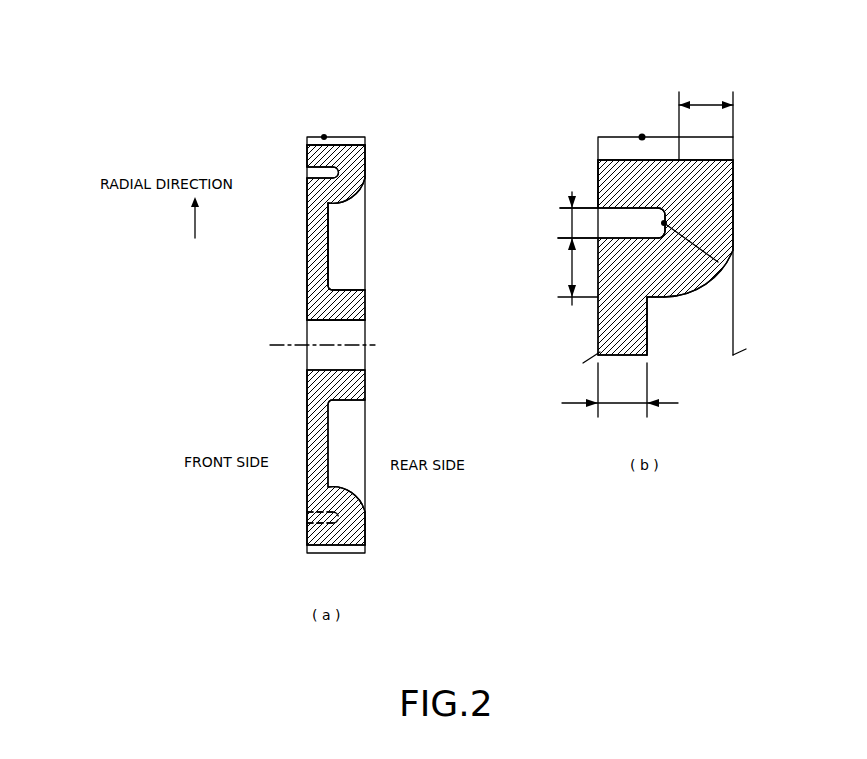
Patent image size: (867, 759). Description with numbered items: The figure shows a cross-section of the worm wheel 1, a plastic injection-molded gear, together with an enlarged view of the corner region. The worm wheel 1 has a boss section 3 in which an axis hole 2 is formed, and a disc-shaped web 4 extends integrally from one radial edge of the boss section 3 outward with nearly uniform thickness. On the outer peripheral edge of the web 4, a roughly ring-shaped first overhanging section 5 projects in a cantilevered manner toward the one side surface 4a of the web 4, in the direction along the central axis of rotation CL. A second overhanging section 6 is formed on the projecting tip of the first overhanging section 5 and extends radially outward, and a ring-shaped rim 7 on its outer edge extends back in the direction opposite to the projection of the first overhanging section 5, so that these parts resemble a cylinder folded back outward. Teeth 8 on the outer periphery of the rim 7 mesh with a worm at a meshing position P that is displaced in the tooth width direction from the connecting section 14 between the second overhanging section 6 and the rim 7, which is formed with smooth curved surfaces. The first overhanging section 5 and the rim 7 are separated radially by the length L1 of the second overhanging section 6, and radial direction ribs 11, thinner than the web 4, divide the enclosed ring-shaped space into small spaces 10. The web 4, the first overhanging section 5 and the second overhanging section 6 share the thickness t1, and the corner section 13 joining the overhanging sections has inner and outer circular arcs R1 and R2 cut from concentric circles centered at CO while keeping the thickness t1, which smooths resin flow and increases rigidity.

The worm wheel 1 is at (374, 131).
The axis hole 2 is at (367, 354).
The boss section 3 is at (367, 306).
The web 4 is at (335, 268).
The one side surface 4a is at (332, 240).
The first overhanging section 5 is at (333, 207).
The second overhanging section 6 is at (367, 170).
The rim 7 is at (307, 152).
The teeth 8 is at (318, 140).
The small spaces 10 is at (349, 144).
The radial direction ribs 11 is at (307, 172).
The corner section 13 is at (348, 193).
The connecting section 14 is at (328, 198).
The meshing position P is at (324, 135).
The center of concentric circles CO is at (664, 222).
The circular arc R1 is at (672, 226).
The circular arc R2 is at (716, 262).
The thickness t1 is at (639, 256).
The length of the second overhanging section L1 is at (570, 223).
The central axis of rotation CL is at (272, 345).